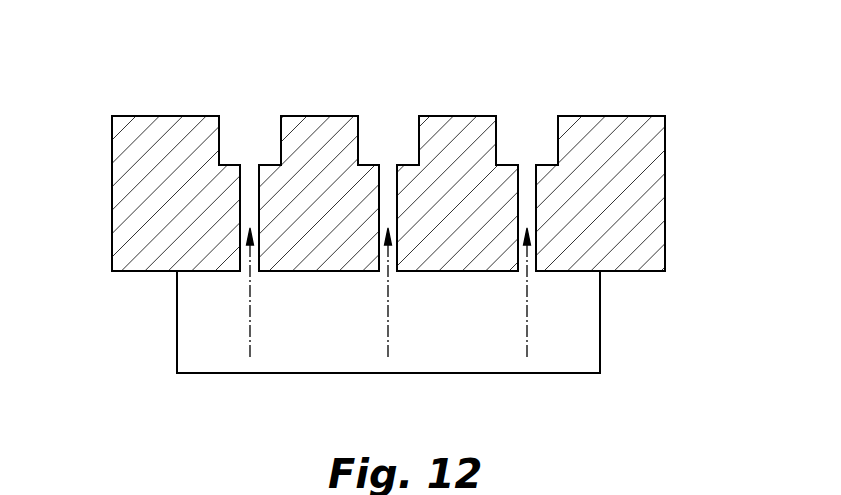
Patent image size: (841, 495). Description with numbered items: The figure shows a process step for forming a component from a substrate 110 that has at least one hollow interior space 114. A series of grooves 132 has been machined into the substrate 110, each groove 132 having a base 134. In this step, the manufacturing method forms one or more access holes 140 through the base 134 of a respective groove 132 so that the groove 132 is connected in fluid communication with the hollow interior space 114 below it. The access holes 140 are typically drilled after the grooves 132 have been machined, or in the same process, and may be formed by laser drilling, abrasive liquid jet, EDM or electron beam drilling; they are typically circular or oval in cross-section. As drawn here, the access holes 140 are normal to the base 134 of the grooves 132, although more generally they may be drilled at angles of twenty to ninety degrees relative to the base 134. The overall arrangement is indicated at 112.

The substrate 110 is at (645, 212).
The assembly 112 is at (133, 123).
The interior space 114 is at (343, 333).
The grooves 132 is at (252, 145).
The base 134 is at (546, 167).
The access holes 140 is at (252, 257).